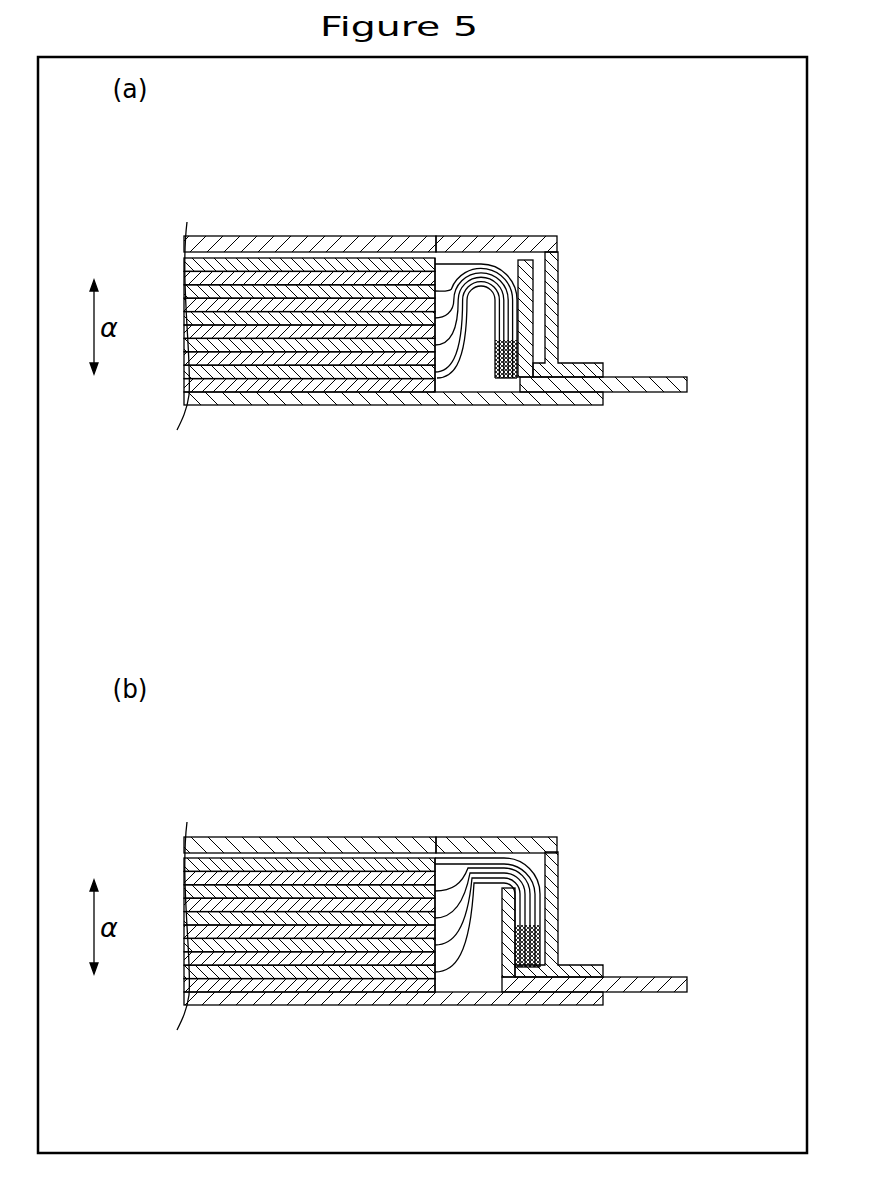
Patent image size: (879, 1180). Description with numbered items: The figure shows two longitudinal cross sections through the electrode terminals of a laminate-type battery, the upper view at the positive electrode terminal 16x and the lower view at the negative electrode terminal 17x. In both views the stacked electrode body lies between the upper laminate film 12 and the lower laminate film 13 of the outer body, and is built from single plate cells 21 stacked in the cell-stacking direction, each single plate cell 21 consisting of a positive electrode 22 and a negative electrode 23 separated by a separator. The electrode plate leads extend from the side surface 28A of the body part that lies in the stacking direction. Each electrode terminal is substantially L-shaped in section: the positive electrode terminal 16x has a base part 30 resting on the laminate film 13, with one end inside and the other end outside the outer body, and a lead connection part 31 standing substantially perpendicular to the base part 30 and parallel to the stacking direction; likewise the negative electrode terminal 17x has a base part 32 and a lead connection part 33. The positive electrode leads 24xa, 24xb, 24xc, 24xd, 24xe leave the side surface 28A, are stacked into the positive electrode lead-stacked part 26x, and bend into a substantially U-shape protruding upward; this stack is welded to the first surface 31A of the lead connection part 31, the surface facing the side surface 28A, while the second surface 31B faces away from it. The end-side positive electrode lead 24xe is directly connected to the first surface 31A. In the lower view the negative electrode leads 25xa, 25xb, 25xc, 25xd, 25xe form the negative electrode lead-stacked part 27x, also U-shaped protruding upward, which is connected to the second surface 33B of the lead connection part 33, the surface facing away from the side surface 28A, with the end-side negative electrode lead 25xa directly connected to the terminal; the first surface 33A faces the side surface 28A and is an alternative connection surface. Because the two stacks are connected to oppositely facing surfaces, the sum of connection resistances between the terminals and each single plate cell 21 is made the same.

The laminate film 12 is at (229, 245).
The laminate film 13 is at (213, 397).
The single plate cell 21 is at (309, 555).
The positive electrode 22 is at (298, 265).
The negative electrode 23 is at (341, 277).
The side surface 28A is at (445, 270).
The positive electrode lead 24xa is at (438, 378).
The positive electrode lead 24xb is at (455, 340).
The positive electrode lead 24xc is at (463, 330).
The positive electrode lead 24xd is at (468, 293).
The positive electrode lead 24xe is at (482, 266).
The positive electrode lead-stacked part 26x is at (491, 365).
The positive electrode terminal 16x is at (602, 292).
The base part 30 is at (668, 388).
The lead connection part 31 is at (528, 343).
The first surface 31A is at (507, 252).
The second surface 31B is at (560, 275).
The negative electrode lead 25xa is at (497, 970).
The negative electrode lead 25xb is at (468, 950).
The negative electrode lead 25xc is at (448, 950).
The negative electrode lead 25xd is at (468, 866).
The negative electrode lead 25xe is at (482, 860).
The negative electrode lead-stacked part 27x is at (533, 968).
The negative electrode terminal 17x is at (594, 896).
The base part 32 is at (668, 988).
The lead connection part 33 is at (540, 915).
The first surface 33A is at (507, 853).
The second surface 33B is at (562, 872).